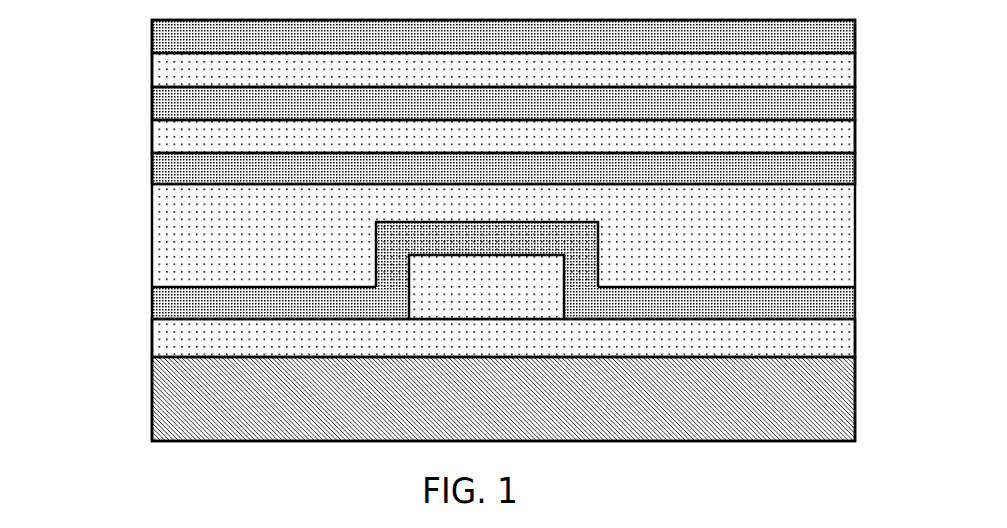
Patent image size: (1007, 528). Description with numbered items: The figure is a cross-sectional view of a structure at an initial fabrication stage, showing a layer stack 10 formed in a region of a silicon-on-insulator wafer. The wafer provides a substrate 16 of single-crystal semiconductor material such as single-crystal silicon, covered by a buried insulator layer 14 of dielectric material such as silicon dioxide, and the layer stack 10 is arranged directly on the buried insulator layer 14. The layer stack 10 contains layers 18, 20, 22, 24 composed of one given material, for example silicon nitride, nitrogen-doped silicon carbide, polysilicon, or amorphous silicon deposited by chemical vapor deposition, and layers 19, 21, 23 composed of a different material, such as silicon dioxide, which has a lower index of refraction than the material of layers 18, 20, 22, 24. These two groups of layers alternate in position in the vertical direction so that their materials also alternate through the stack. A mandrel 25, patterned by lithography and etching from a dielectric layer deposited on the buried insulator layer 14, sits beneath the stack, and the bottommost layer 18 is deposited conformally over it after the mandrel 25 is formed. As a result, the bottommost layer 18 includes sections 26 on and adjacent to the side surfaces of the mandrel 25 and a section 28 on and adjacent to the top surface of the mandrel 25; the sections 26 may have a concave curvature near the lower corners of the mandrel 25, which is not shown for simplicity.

The layer stack 10 is at (68, 23).
The buried insulator layer 14 is at (822, 342).
The substrate 16 is at (822, 412).
The bottommost layer 18 is at (185, 300).
The layer 19 is at (183, 225).
The layer 20 is at (185, 170).
The layer 21 is at (815, 142).
The layer 22 is at (185, 105).
The layer 23 is at (815, 72).
The layer 24 is at (187, 40).
The mandrel 25 is at (492, 290).
The sections 26 is at (388, 258).
The section 28 is at (490, 238).